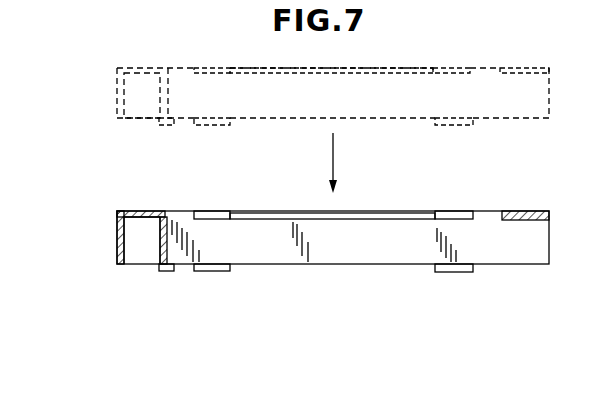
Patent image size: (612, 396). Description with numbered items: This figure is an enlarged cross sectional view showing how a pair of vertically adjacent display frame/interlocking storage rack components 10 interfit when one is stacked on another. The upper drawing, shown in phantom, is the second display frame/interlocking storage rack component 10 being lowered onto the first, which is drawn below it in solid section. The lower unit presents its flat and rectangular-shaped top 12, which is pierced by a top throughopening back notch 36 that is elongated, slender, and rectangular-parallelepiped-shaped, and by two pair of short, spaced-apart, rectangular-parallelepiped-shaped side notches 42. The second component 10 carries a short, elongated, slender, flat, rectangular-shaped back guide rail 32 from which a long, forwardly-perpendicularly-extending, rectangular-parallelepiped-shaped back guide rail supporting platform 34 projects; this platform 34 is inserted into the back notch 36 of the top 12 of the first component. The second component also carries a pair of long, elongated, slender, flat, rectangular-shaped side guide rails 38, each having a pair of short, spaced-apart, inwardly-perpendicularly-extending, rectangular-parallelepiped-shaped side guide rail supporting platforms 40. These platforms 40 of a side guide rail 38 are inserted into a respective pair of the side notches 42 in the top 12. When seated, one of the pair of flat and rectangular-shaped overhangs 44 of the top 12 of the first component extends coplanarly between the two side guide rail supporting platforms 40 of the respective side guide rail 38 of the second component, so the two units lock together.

The display frame/interlocking storage rack component 10 is at (110, 82).
The top 12 is at (138, 209).
The back guide rail 32 is at (160, 90).
The back guide rail supporting platform 34 is at (170, 125).
The back notch 36 is at (165, 215).
The side guide rail 38 is at (206, 93).
The side guide rail supporting platform 40 is at (213, 128).
The side notch 42 is at (213, 212).
The overhang 44 is at (290, 213).